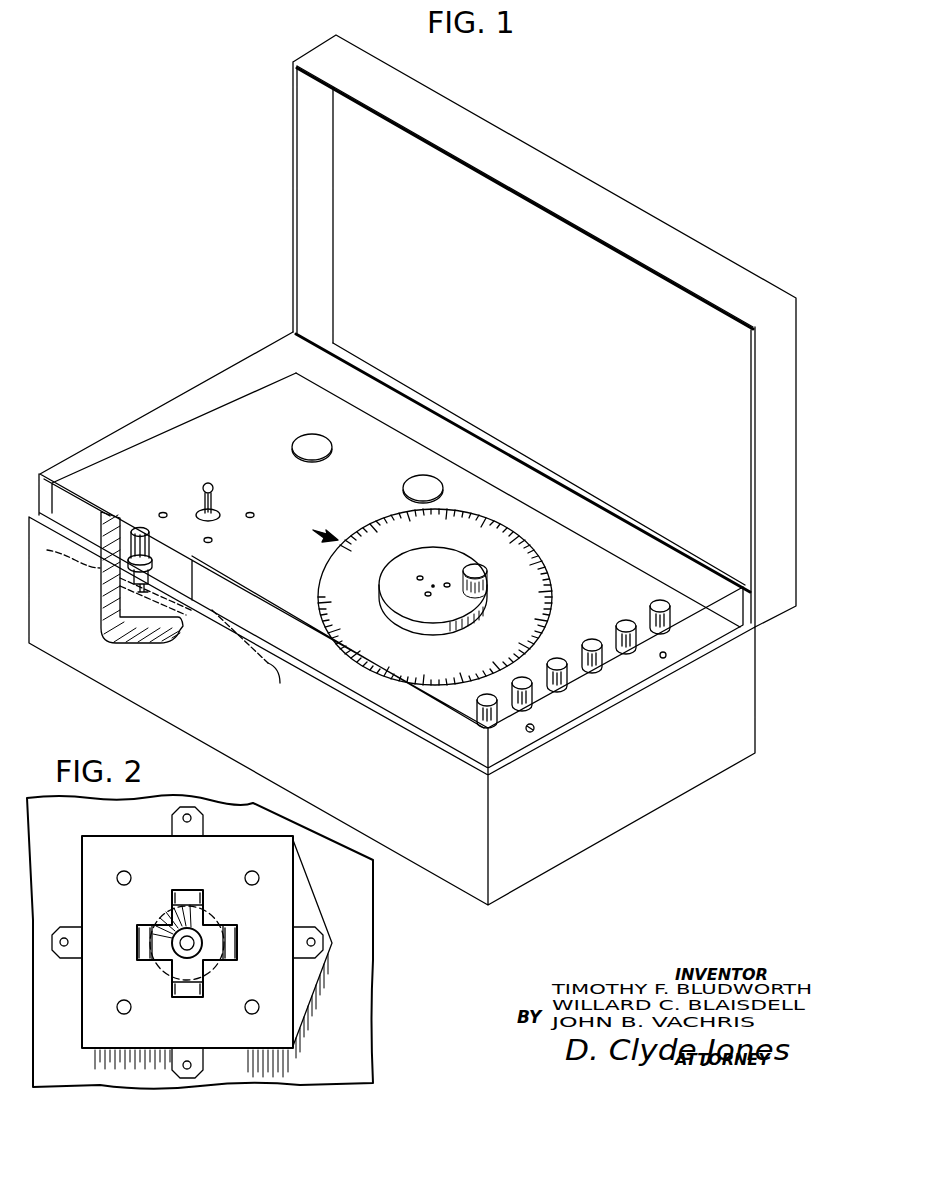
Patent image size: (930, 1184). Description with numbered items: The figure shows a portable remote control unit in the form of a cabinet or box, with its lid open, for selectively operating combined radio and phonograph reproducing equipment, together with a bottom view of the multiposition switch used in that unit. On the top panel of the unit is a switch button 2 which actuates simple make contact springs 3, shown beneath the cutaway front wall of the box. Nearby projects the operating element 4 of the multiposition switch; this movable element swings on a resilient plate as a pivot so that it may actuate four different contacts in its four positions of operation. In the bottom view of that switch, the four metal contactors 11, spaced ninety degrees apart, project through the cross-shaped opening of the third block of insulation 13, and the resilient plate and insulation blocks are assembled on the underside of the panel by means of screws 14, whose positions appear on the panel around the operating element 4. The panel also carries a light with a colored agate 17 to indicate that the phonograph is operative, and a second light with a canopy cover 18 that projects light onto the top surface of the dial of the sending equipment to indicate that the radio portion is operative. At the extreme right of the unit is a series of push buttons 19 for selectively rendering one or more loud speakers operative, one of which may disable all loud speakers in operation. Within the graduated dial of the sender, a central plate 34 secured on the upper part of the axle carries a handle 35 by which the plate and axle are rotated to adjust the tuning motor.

In FIG. 1, the switch button 2 is at (150, 537).
In FIG. 1, the make contact springs 3 is at (134, 590).
In FIG. 1, the operating element of multiposition switch 4 is at (213, 488).
In FIG. 2, the metal contactors 11 is at (201, 823).
In FIG. 2, the third block of insulation 13 is at (207, 956).
In FIG. 1, the screws 14 is at (166, 512).
In FIG. 1, the colored agate 17 is at (315, 438).
In FIG. 1, the canopy cover 18 is at (395, 476).
In FIG. 1, the push buttons 19 is at (602, 618).
In FIG. 1, the central plate 34 is at (433, 591).
In FIG. 1, the handle 35 is at (463, 582).